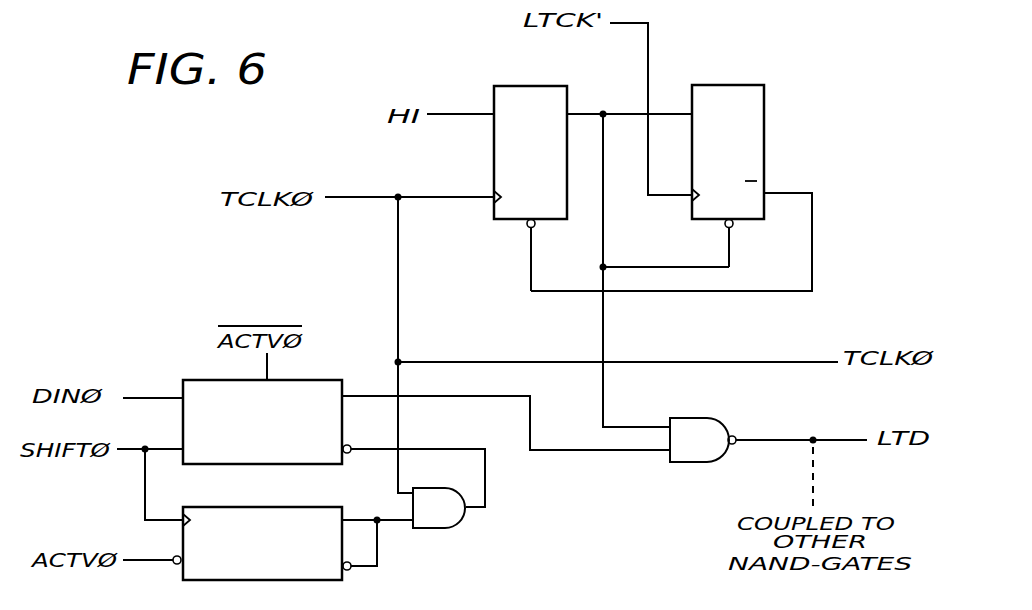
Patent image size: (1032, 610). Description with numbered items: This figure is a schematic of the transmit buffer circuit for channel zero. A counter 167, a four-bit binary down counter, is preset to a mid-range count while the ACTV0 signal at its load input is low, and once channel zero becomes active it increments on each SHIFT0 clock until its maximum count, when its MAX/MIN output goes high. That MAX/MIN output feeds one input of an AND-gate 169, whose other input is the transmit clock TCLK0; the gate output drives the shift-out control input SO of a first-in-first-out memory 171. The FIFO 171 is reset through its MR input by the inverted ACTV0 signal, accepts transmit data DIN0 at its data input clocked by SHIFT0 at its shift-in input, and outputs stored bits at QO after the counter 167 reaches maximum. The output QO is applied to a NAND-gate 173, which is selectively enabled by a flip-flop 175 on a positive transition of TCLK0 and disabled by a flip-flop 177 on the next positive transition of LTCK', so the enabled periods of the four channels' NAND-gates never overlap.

The counter 167 is at (321, 507).
The AND-gate 169 is at (447, 528).
The first-in-first-out (FIFO) memory 171 is at (331, 380).
The NAND-gate 173 is at (720, 407).
The flip-flop 175 is at (513, 86).
The flip-flop 177 is at (752, 85).